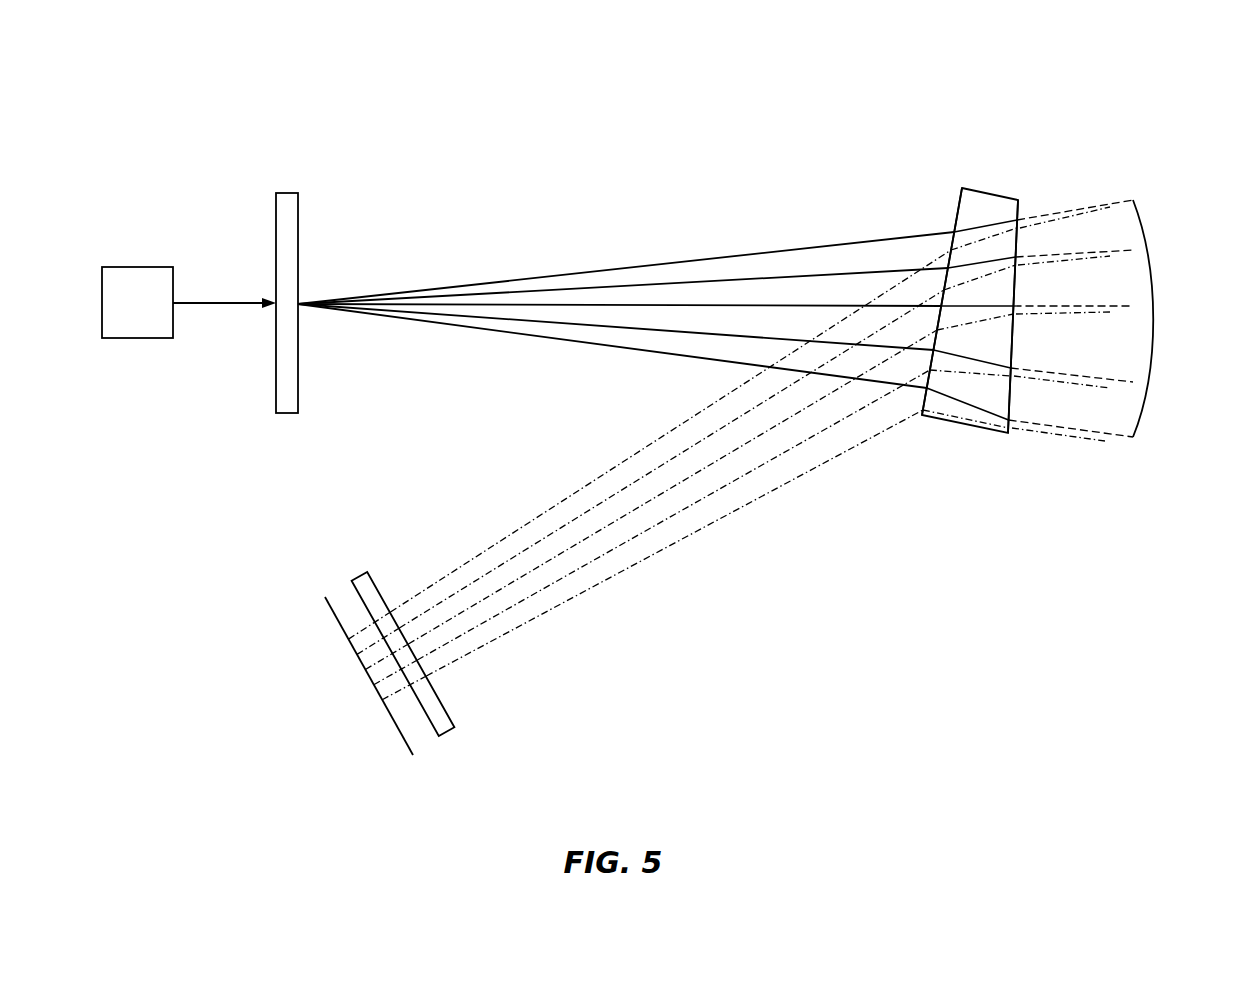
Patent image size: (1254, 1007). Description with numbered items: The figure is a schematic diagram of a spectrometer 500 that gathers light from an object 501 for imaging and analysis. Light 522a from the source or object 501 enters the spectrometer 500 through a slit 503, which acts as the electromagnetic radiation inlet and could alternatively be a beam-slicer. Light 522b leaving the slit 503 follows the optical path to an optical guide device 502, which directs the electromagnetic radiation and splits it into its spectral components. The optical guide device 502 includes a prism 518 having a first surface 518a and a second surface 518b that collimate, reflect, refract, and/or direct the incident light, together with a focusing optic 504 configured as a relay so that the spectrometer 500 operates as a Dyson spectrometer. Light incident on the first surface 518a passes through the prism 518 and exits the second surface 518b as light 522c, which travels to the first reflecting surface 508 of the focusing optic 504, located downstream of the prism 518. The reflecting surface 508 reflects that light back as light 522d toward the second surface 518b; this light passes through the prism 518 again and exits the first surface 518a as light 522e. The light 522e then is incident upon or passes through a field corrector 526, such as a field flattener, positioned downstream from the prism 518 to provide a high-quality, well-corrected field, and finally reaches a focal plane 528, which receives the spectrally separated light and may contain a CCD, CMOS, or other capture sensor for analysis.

The spectrometer 500 is at (410, 139).
The object 501 is at (137, 302).
The optical guide device 502 is at (653, 136).
The slit 503 is at (273, 260).
The focusing optic 504 is at (1070, 48).
The first reflecting surface 508 is at (1142, 215).
The prism 518 is at (990, 193).
The first surface 518a is at (955, 205).
The second surface 518b is at (1018, 200).
The light 522a is at (225, 305).
The light 522b is at (580, 272).
The light 522c is at (1063, 213).
The light 522d is at (1057, 320).
The light 522e is at (732, 512).
The field corrector 526 is at (447, 712).
The focal plane 528 is at (343, 630).